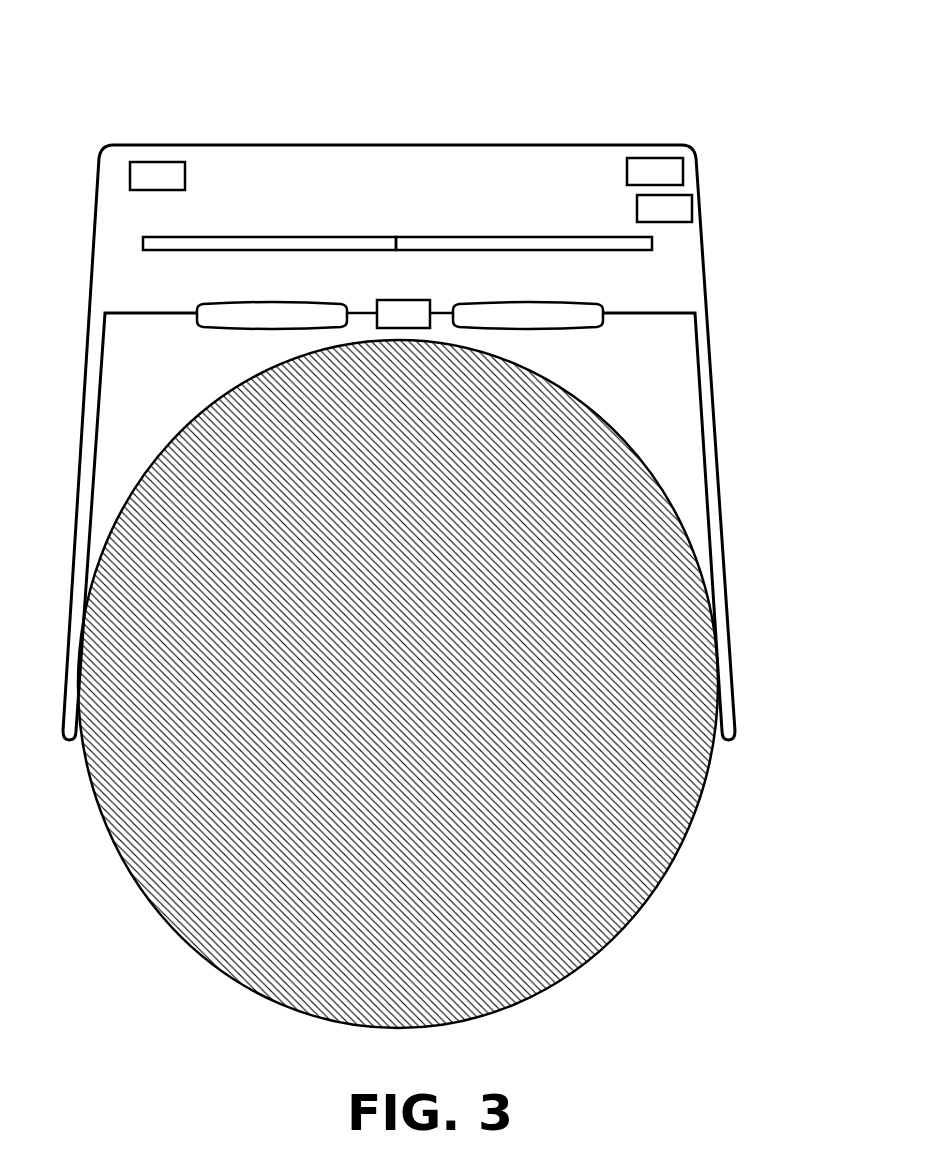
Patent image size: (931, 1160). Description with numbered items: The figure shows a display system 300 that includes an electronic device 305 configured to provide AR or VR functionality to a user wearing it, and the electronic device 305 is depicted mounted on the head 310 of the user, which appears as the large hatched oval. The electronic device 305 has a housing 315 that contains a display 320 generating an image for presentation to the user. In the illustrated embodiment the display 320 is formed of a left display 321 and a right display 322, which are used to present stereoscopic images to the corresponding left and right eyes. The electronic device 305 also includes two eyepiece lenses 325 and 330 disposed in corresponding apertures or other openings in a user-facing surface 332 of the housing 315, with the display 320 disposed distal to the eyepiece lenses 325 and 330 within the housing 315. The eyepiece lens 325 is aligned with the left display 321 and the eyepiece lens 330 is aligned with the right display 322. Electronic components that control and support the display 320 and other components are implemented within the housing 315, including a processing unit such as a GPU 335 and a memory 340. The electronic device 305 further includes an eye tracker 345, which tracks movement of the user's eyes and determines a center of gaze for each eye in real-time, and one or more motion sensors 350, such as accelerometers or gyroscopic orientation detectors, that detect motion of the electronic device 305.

The display system 300 is at (750, 52).
The electronic device 305 is at (485, 125).
The head 310 is at (98, 808).
The housing 315 is at (92, 272).
The display 320 is at (413, 227).
The left display 321 is at (163, 251).
The right display 322 is at (633, 251).
The eyepiece lens 325 is at (227, 330).
The eyepiece lens 330 is at (567, 330).
The user-facing surface 332 is at (127, 317).
The GPU 335 is at (670, 182).
The memory 340 is at (679, 220).
The eye tracker 345 is at (418, 325).
The motion sensors 350 is at (172, 187).